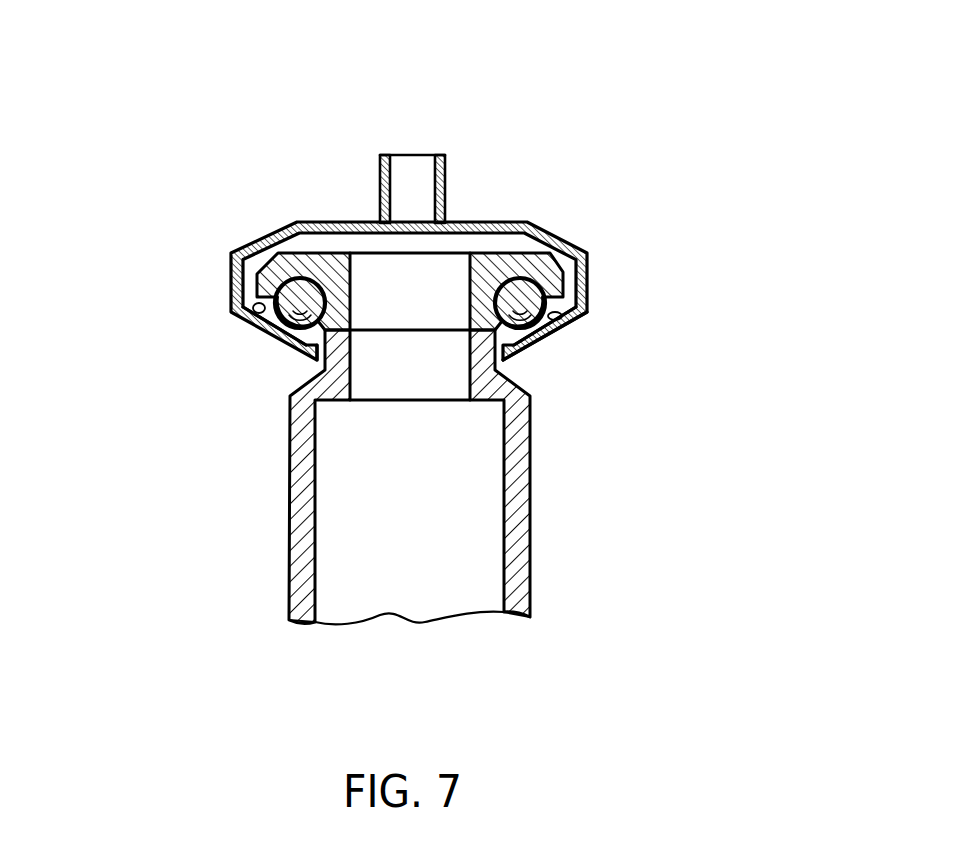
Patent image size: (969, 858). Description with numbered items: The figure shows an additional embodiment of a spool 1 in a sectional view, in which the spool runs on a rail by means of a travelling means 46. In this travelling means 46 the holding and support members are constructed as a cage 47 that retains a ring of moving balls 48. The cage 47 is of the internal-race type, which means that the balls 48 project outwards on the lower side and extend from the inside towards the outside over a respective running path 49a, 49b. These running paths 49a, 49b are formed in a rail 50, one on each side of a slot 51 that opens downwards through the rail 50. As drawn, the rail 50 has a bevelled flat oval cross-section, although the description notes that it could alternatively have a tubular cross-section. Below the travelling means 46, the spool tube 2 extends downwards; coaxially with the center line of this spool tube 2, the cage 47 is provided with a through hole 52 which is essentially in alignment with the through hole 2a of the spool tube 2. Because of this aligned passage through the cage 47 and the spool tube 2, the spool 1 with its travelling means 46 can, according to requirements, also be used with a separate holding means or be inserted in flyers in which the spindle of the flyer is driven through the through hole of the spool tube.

The spool 1 is at (258, 503).
The spool tube 2 is at (531, 566).
The through hole of the spool tube 2a is at (434, 558).
The travelling means 46 is at (610, 333).
The cage 47 is at (528, 253).
The balls 48 is at (547, 304).
The running path 49a is at (243, 314).
The running path 49b is at (573, 326).
The rail 50 is at (281, 226).
The slot 51 is at (284, 376).
The through hole 52 is at (437, 287).